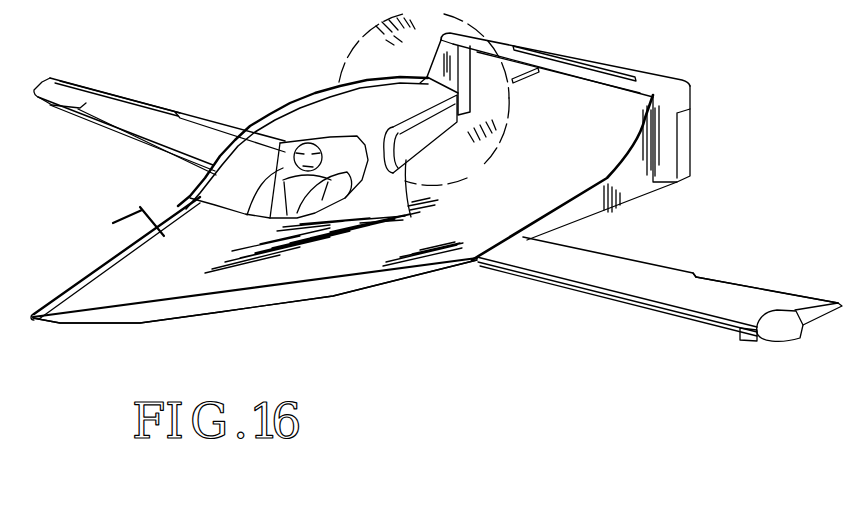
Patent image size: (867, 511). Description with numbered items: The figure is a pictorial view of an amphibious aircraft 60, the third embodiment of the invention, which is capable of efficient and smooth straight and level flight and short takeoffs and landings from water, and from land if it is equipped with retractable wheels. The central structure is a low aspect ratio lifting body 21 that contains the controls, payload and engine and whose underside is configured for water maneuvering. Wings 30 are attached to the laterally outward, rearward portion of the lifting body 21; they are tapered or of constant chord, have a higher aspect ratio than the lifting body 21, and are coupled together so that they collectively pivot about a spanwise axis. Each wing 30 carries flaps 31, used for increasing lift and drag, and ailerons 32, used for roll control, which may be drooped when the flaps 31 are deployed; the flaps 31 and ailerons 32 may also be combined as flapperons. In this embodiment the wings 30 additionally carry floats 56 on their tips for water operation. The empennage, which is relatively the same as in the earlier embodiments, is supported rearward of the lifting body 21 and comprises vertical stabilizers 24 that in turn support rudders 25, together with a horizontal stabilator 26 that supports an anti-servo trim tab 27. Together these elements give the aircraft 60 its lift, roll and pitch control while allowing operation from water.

The lifting body 21 is at (306, 276).
The vertical stabilizers 24 is at (636, 128).
The rudders 25 is at (692, 146).
The horizontal stabilator 26 is at (520, 69).
The anti-servo trim tab 27 is at (593, 60).
The wings 30 is at (143, 141).
The flaps 31 is at (224, 122).
The ailerons 32 is at (156, 95).
The floats 56 is at (765, 343).
The aircraft 60 is at (458, 344).